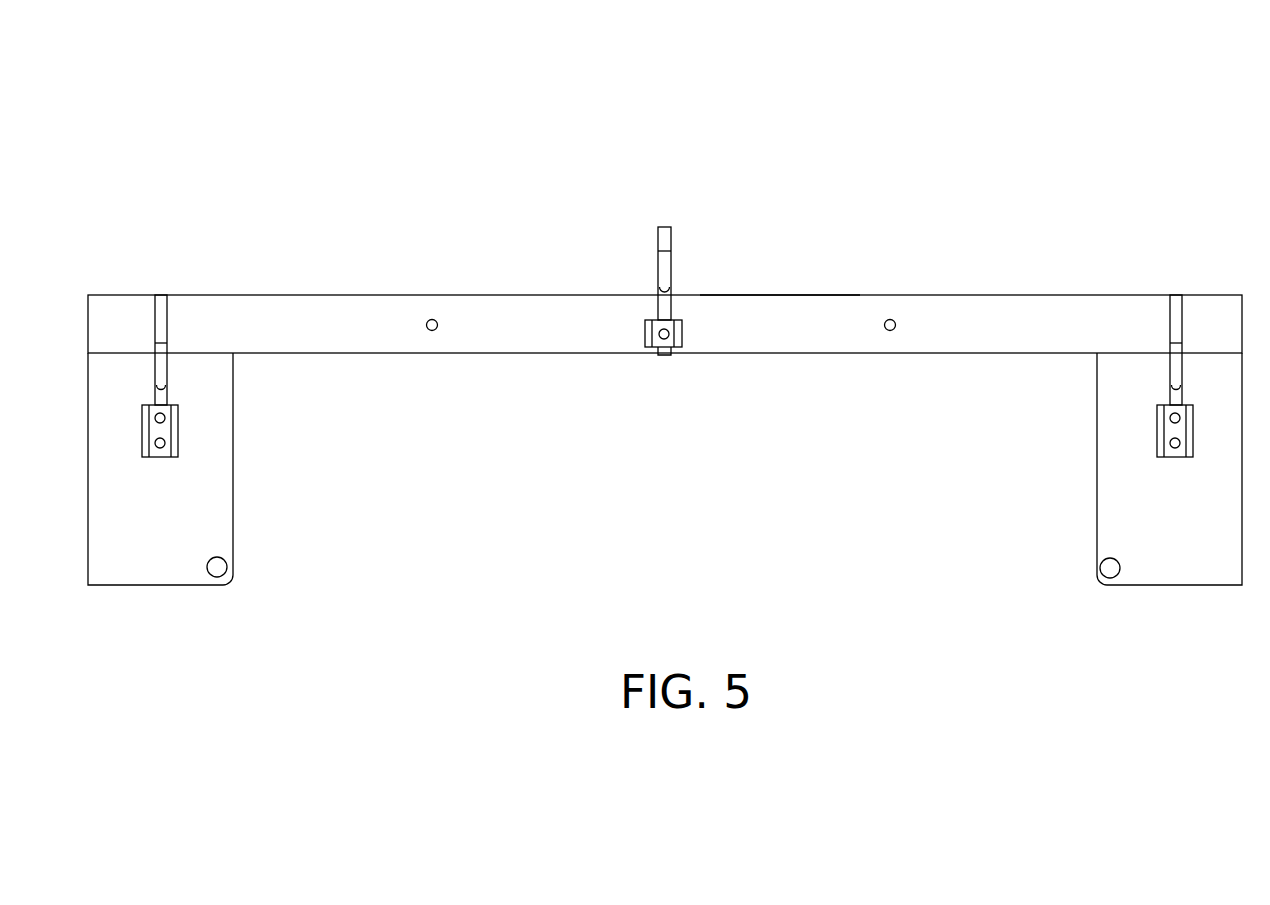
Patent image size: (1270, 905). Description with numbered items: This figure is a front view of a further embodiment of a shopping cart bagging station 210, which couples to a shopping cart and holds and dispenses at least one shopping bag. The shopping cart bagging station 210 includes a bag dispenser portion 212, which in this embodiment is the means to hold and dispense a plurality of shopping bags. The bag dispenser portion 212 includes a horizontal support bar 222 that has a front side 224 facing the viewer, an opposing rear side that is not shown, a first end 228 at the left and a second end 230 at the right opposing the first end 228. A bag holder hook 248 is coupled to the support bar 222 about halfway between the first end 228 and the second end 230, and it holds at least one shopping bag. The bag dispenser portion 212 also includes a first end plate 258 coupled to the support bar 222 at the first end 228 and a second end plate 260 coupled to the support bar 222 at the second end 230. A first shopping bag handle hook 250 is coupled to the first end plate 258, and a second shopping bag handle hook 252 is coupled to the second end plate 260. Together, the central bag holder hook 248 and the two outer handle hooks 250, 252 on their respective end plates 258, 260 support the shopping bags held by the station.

The shopping cart bagging station 210 is at (703, 127).
The bag dispenser portion 212 is at (643, 487).
The support bar 222 is at (483, 310).
The front side 224 is at (808, 335).
The first end 228 is at (95, 275).
The second end 230 is at (1237, 277).
The bag holder hook 248 is at (663, 240).
The first shopping bag handle hook 250 is at (162, 322).
The second shopping bag handle hook 252 is at (1177, 313).
The first end plate 258 is at (213, 500).
The second end plate 260 is at (1113, 454).